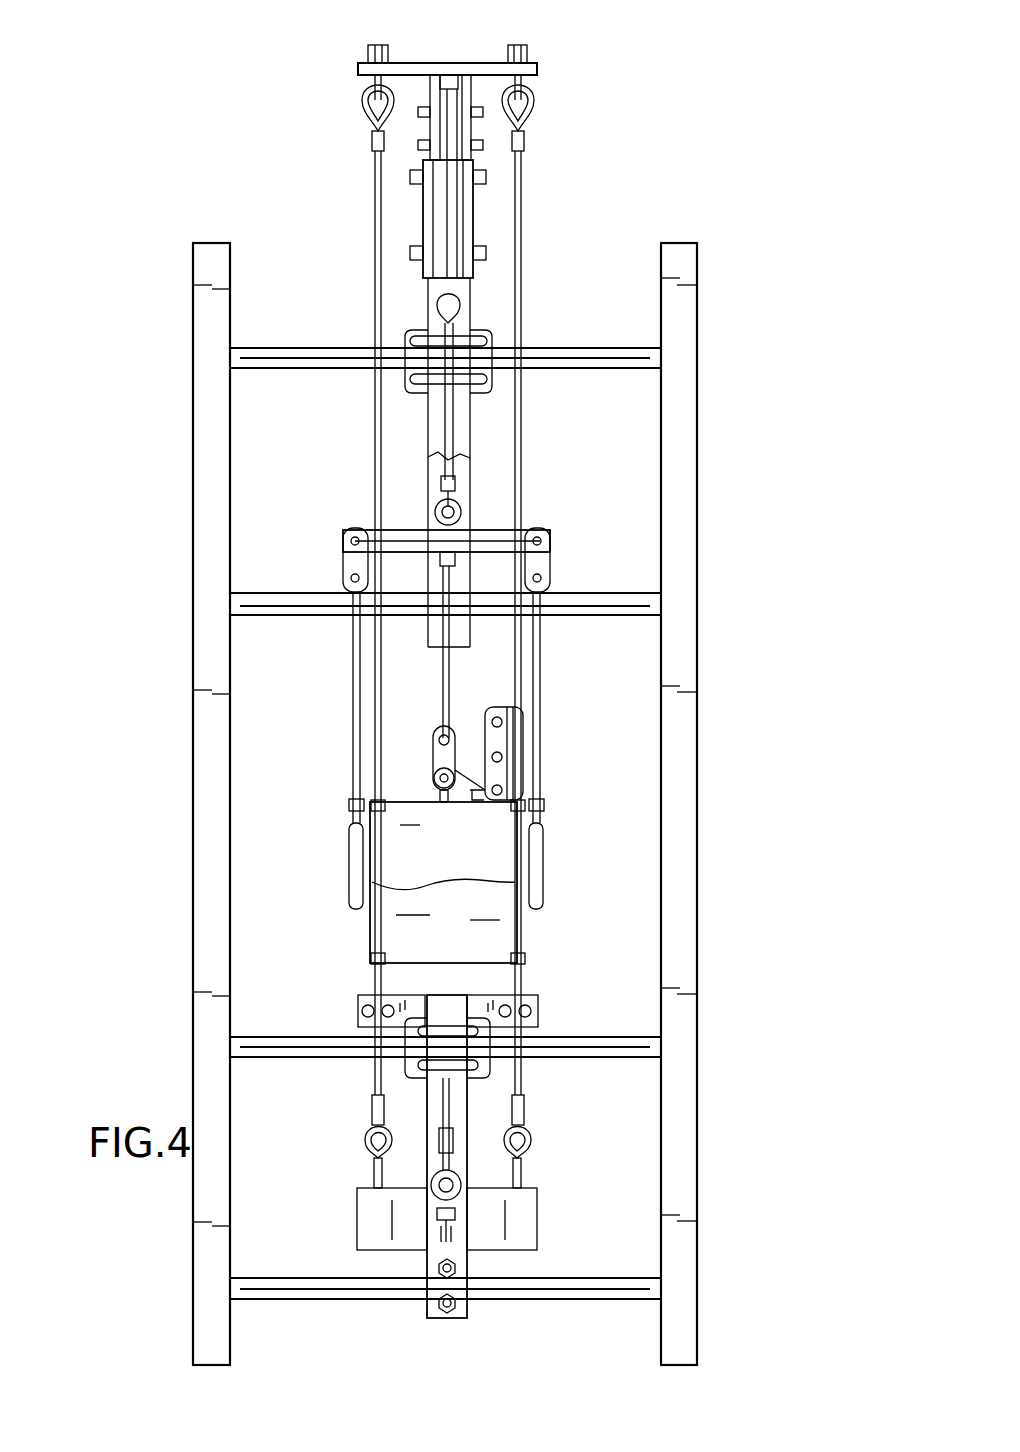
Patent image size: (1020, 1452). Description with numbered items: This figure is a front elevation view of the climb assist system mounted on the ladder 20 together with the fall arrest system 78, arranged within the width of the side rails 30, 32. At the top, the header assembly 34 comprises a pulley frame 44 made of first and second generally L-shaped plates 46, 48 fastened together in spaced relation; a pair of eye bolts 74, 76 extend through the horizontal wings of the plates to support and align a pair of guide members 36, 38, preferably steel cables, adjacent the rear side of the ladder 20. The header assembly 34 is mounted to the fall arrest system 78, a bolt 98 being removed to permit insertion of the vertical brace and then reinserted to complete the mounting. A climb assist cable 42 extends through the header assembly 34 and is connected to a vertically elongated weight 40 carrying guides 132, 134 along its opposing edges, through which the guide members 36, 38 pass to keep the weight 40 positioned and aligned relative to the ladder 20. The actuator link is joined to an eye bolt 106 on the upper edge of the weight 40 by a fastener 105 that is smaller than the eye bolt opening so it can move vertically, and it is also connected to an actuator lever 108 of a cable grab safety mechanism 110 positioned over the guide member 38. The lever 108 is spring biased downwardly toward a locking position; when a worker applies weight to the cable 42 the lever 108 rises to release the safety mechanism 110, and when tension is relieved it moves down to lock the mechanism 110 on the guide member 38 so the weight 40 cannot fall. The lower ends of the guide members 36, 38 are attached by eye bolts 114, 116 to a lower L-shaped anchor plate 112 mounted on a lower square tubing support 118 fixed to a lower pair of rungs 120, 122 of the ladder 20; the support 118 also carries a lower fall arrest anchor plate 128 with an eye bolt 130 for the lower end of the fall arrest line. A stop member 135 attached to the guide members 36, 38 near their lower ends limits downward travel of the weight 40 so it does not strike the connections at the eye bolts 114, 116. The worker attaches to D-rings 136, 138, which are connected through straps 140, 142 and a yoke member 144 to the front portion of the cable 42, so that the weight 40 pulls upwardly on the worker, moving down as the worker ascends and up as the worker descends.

The ladder 20 is at (705, 414).
The side rail 30 is at (200, 626).
The side rail 32 is at (697, 635).
The header assembly 34 is at (478, 52).
The guide member 36 is at (372, 206).
The guide member 38 is at (522, 276).
The weight 40 is at (410, 925).
The climb assist cable 42 is at (428, 418).
The pulley frame 44 is at (412, 52).
The first generally L-shaped plate 46 is at (412, 90).
The second generally L-shaped plate 48 is at (478, 90).
The eye bolt 74 is at (365, 84).
The eye bolt 76 is at (530, 86).
The fall arrest system 78 is at (486, 214).
The bolt 98 is at (488, 177).
The fastener 105 is at (438, 756).
The eye bolt 106 is at (432, 776).
The actuator lever 108 is at (508, 833).
The cable grab safety mechanism 110 is at (520, 745).
The lower L-shaped anchor plate 112 is at (525, 1203).
The eye bolt 114 is at (368, 1162).
The eye bolt 116 is at (528, 1164).
The lower square tubing support 118 is at (460, 1262).
The lower rung 120 is at (600, 1279).
The lower rung 122 is at (590, 1040).
The lower fall arrest anchor plate 128 is at (460, 1222).
The eye bolt 130 is at (432, 1190).
The guide 132 is at (349, 802).
The guide 134 is at (540, 806).
The stop member 135 is at (358, 1006).
The D-ring 136 is at (350, 876).
The D-ring 138 is at (540, 884).
The strap 140 is at (353, 676).
The strap 142 is at (528, 768).
The yoke member 144 is at (532, 528).